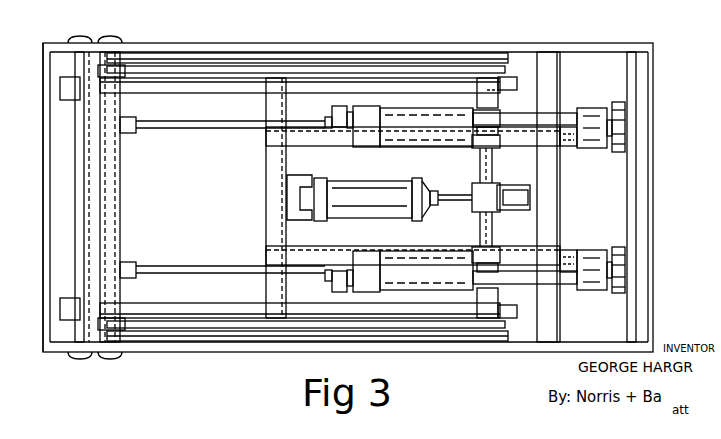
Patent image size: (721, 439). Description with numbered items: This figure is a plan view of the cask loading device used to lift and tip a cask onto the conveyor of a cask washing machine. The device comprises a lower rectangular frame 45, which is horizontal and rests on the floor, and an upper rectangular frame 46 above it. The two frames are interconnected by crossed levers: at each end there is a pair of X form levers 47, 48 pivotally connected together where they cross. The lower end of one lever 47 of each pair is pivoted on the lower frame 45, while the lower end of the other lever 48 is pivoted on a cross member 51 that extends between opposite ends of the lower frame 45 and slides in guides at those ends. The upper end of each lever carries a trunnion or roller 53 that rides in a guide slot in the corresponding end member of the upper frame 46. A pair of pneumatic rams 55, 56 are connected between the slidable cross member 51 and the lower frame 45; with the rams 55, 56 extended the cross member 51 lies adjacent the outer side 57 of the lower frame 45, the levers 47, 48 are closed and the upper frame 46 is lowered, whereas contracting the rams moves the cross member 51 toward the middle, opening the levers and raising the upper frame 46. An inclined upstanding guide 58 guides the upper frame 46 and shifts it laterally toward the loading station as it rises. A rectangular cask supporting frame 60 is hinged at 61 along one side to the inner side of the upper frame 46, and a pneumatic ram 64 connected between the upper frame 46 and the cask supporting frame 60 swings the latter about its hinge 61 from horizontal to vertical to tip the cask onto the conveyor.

The lower rectangular frame 45 is at (653, 90).
The upper rectangular frame 46 is at (167, 87).
The lever 47 is at (245, 62).
The lever 48 is at (273, 72).
The cross member 51 is at (117, 188).
The trunnion or roller 53 is at (507, 88).
The pneumatic ram 55 is at (563, 146).
The pneumatic ram 56 is at (562, 252).
The outer side 57 is at (43, 118).
The upstanding guide 58 is at (567, 115).
The cask supporting frame 60 is at (273, 142).
The hinge 61 is at (480, 148).
The pneumatic ram 64 is at (375, 190).